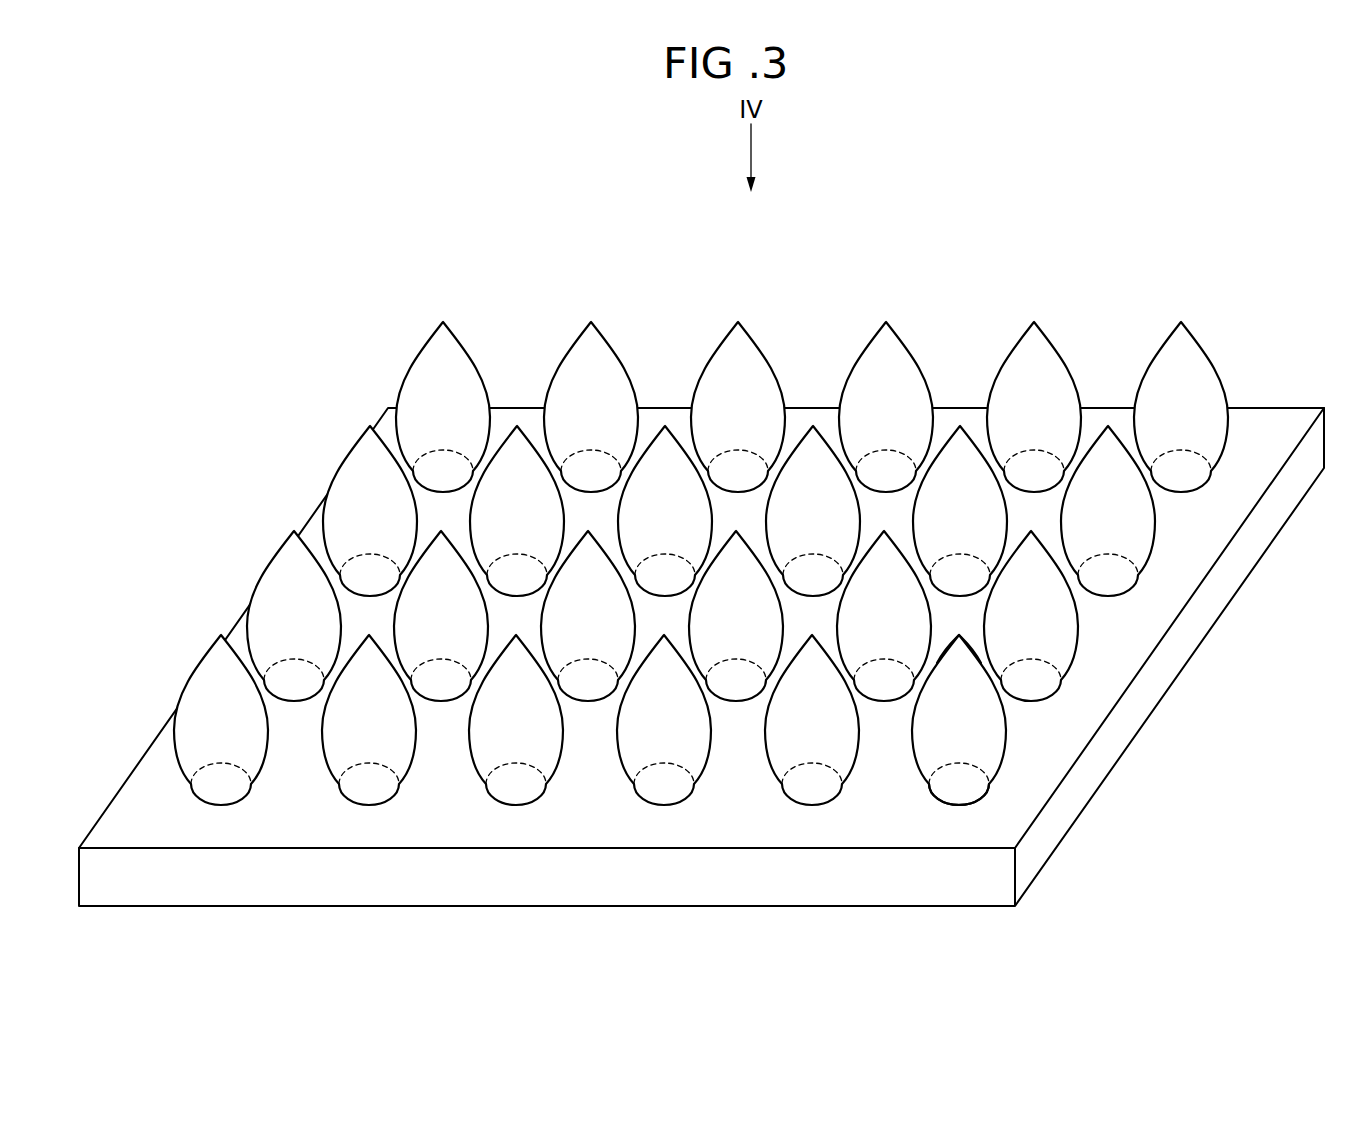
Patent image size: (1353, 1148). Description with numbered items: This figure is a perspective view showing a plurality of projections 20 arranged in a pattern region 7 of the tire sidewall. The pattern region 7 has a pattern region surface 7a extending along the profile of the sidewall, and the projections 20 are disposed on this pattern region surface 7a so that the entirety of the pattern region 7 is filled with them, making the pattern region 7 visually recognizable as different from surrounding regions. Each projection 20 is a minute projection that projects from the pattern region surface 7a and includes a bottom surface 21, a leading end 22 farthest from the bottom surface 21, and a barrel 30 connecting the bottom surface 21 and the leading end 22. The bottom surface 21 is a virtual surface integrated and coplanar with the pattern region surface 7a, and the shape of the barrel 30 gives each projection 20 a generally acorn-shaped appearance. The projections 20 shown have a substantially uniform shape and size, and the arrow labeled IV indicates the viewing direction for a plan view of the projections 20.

The pattern region 7 is at (701, 619).
The pattern region surface 7a is at (155, 807).
The projection 20 is at (723, 611).
The bottom surface 21 is at (980, 764).
The leading end 22 is at (959, 635).
The barrel 30 is at (997, 730).